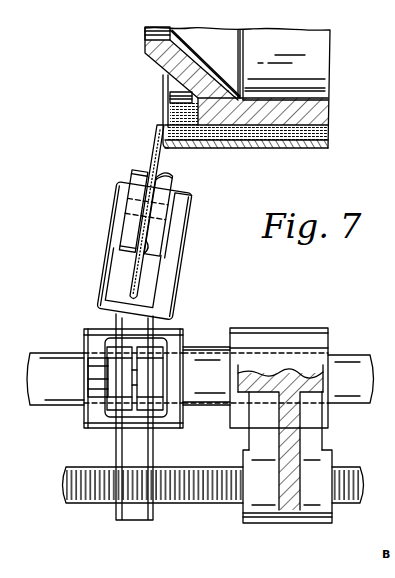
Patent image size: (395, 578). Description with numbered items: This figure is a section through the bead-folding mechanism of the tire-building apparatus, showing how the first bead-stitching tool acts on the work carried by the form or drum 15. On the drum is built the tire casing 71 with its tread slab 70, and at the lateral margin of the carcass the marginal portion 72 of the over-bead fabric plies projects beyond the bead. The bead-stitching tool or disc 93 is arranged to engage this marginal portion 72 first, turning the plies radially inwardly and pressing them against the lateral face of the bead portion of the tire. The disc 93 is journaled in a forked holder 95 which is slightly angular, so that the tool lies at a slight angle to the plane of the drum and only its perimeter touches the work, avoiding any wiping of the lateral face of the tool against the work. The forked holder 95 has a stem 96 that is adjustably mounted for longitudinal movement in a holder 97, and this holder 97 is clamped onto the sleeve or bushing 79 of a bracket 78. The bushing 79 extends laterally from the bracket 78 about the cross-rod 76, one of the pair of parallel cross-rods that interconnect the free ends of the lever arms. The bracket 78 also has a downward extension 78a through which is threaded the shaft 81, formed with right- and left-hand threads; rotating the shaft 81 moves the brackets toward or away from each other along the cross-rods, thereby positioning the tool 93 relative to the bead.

The form or drum 15 is at (318, 44).
The tread slab 70 is at (312, 150).
The tire casing 71 is at (260, 150).
The marginal portion of over-bead fabric plies 72 is at (162, 97).
The cross-rod 76 is at (350, 355).
The bracket 78 is at (290, 328).
The downward extension of bracket 78a is at (285, 523).
The sleeve or bushing 79 is at (207, 345).
The shaft 81 is at (183, 505).
The bead-stitching tool or disc 93 is at (154, 148).
The forked holder 95 is at (107, 256).
The stem 96 is at (120, 443).
The holder 97 is at (84, 332).